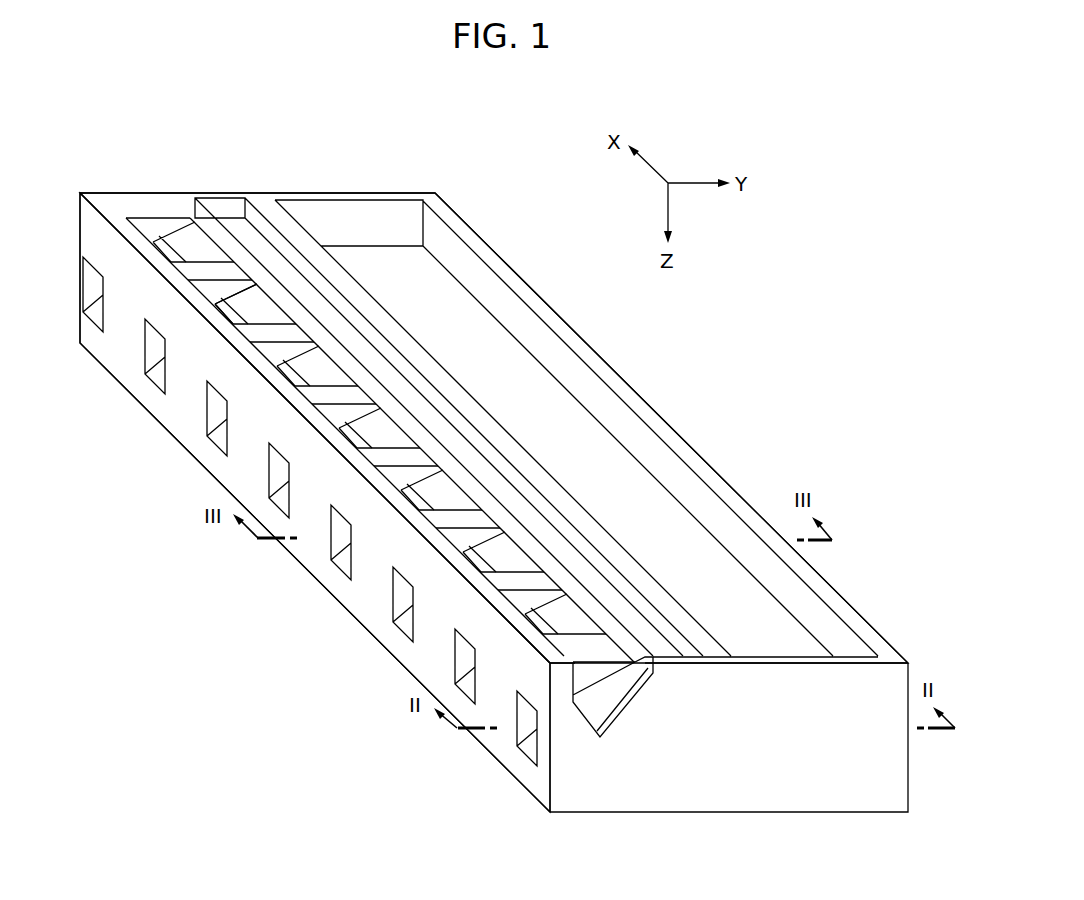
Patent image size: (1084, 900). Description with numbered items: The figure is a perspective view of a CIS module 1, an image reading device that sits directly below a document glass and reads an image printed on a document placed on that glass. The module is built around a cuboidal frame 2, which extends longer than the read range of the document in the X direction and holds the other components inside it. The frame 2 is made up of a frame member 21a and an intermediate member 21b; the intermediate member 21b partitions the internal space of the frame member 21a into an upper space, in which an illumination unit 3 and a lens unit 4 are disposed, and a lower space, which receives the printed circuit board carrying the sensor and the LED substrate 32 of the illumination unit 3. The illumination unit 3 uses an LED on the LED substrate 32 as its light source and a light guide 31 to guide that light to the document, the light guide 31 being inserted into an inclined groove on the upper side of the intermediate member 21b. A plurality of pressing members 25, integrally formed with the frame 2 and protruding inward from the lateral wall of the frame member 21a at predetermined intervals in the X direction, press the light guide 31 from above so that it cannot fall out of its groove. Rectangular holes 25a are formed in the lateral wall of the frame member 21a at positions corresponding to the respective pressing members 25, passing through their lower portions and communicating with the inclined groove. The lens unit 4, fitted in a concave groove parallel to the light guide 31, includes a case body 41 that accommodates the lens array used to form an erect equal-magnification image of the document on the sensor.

The CIS module 1 is at (805, 347).
The frame 2 is at (643, 414).
The illumination unit 3 is at (173, 241).
The lens unit 4 is at (228, 214).
The frame member 21a is at (373, 588).
The intermediate member 21b is at (412, 268).
The pressing members 25 is at (187, 270).
The rectangular holes 25a is at (158, 375).
The light guide 31 is at (248, 310).
The LED substrate 32 is at (610, 705).
The case body 41 is at (410, 422).